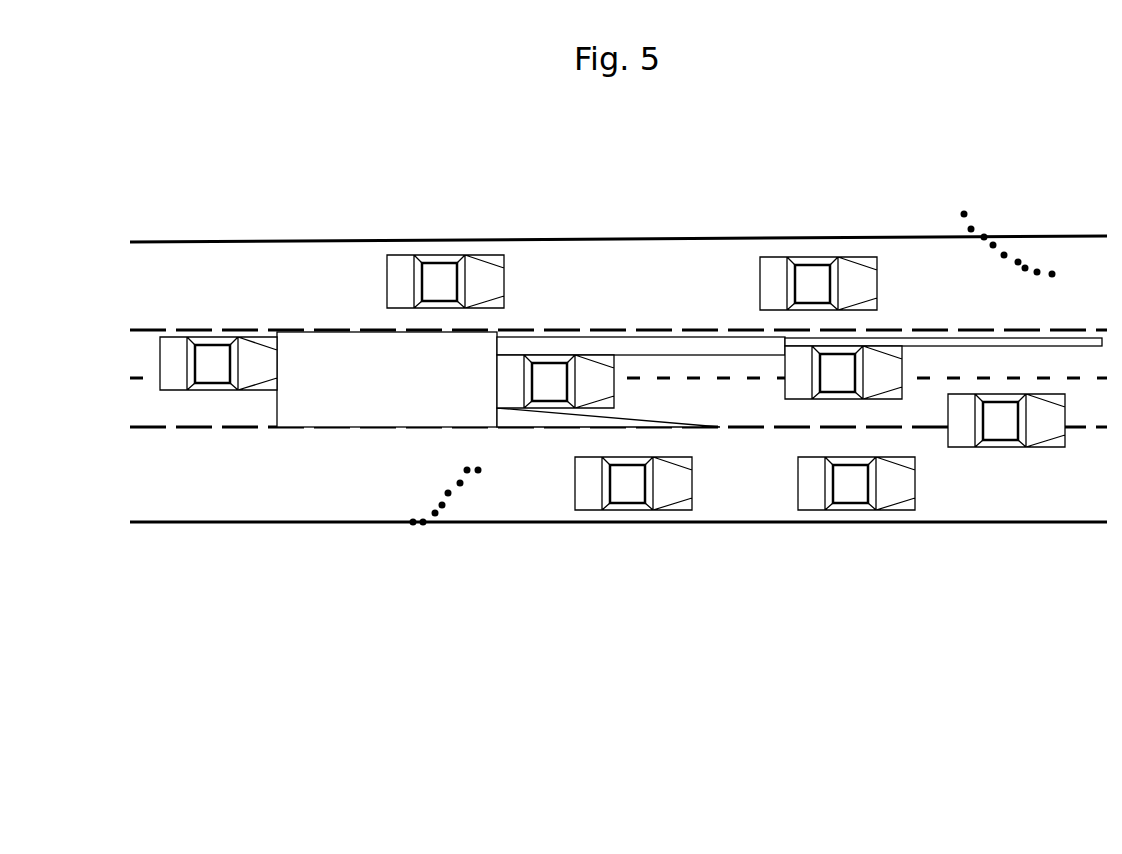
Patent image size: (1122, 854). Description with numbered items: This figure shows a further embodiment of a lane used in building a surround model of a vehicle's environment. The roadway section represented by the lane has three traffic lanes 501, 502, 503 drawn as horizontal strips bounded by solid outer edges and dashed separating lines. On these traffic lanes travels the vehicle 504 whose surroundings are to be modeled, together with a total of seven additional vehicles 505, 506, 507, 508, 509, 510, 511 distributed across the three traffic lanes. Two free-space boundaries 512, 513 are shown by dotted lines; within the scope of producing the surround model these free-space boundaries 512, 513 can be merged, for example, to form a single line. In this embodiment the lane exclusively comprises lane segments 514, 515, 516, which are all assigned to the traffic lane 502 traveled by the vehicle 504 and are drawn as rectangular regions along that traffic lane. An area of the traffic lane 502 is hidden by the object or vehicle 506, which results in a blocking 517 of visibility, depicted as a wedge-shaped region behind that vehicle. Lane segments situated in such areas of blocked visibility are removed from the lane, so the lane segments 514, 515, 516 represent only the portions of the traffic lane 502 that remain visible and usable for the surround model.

The traffic lane 501 is at (193, 287).
The traffic lane 502 is at (1093, 380).
The traffic lane 503 is at (143, 402).
The vehicle 504 is at (213, 370).
The additional vehicle 505 is at (440, 277).
The additional vehicle 506 is at (548, 377).
The additional vehicle 507 is at (810, 283).
The additional vehicle 508 is at (628, 480).
The additional vehicle 509 is at (838, 373).
The additional vehicle 510 is at (848, 480).
The additional vehicle 511 is at (1002, 428).
The free-space boundary 512 is at (1013, 270).
The free-space boundary 513 is at (467, 488).
The lane segment 514 is at (332, 403).
The lane segment 515 is at (654, 343).
The lane segment 516 is at (953, 340).
The blocking of visibility 517 is at (520, 413).